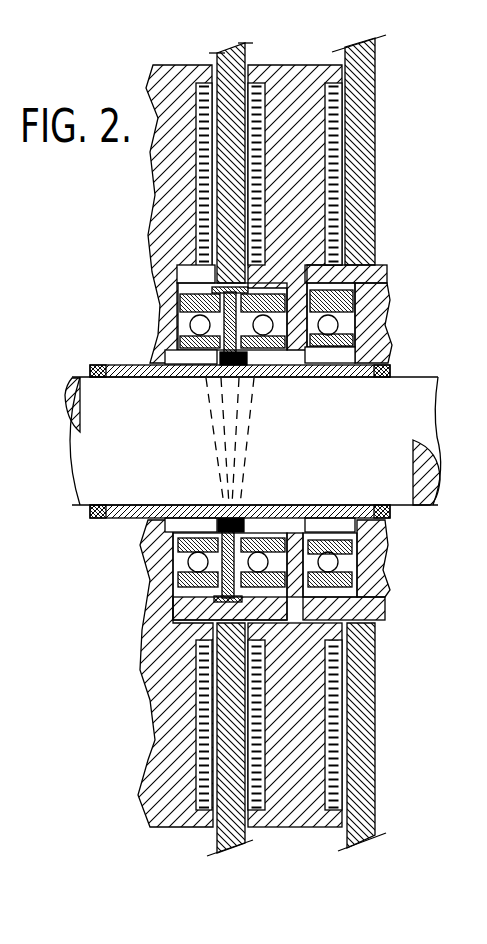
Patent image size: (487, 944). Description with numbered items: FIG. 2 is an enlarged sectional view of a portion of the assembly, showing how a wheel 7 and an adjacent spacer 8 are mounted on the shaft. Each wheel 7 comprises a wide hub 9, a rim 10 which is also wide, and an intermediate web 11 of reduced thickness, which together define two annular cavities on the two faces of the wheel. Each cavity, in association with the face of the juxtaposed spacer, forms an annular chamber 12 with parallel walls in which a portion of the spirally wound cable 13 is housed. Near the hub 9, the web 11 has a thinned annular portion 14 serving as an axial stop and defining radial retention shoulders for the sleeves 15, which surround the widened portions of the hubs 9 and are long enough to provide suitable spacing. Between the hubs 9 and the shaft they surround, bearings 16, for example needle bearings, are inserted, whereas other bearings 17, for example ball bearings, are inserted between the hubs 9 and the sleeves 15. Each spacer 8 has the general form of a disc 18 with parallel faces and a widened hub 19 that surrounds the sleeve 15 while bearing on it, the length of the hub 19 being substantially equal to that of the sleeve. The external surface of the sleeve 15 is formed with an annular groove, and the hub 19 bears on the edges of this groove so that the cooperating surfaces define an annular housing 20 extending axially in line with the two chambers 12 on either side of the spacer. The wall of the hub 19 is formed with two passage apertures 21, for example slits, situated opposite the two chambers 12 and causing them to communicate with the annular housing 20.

The wheel 7 is at (290, 125).
The spacer 8 is at (350, 68).
The hub 9 is at (337, 351).
The rim 10 is at (362, 92).
The web 11 is at (300, 150).
The annular chamber 12 is at (250, 125).
The spirally wound cable 13 is at (260, 192).
The thinned annular portion 14 is at (180, 322).
The sleeve 15 is at (195, 297).
The bearing 16 is at (200, 366).
The bearing 17 is at (190, 352).
The disc 18 is at (240, 62).
The widened hub 19 is at (203, 276).
The annular housing 20 is at (178, 604).
The passage aperture 21 is at (222, 273).